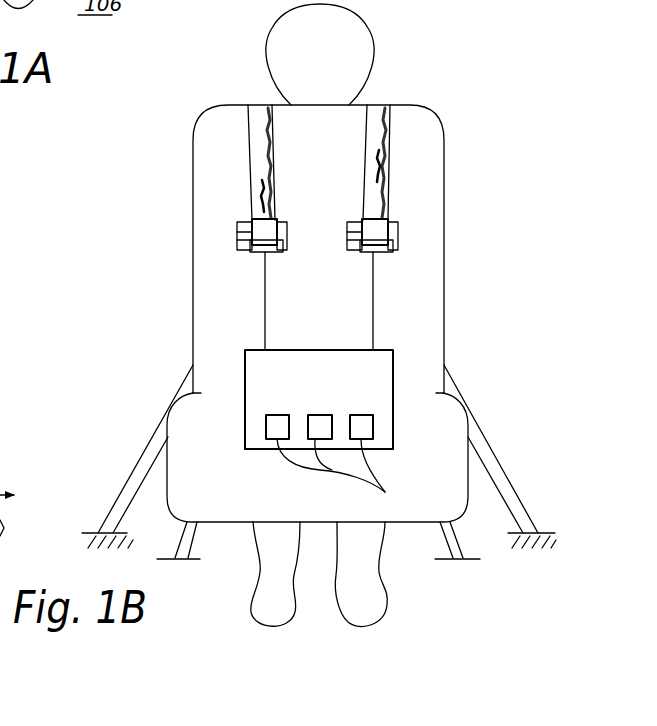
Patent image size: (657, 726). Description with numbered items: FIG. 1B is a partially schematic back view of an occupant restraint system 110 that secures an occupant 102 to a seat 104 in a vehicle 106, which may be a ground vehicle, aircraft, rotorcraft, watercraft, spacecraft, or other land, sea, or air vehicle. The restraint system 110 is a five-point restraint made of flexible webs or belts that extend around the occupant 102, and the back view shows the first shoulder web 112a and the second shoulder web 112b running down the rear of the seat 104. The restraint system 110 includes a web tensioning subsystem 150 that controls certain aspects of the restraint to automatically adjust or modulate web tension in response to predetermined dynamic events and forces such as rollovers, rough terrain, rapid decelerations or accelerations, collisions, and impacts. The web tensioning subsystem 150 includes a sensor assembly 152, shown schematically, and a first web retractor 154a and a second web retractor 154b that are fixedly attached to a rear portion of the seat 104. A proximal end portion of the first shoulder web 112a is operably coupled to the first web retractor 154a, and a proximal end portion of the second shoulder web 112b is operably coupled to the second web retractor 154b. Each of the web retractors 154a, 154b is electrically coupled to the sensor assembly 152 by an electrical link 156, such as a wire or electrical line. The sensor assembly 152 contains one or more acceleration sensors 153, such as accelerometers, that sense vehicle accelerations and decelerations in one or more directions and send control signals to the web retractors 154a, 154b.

The occupant 102 is at (266, 550).
The seat 104 is at (462, 507).
The vehicle 106 is at (466, 625).
The occupant restraint system 110 is at (441, 69).
The first shoulder web 112a is at (252, 157).
The second shoulder web 112b is at (392, 181).
The web tensioning subsystem 150 is at (413, 303).
The sensor assembly 152 is at (263, 449).
The acceleration sensors 153 is at (347, 460).
The first web retractor 154a is at (232, 228).
The second web retractor 154b is at (411, 224).
The electrical link 156 is at (264, 303).